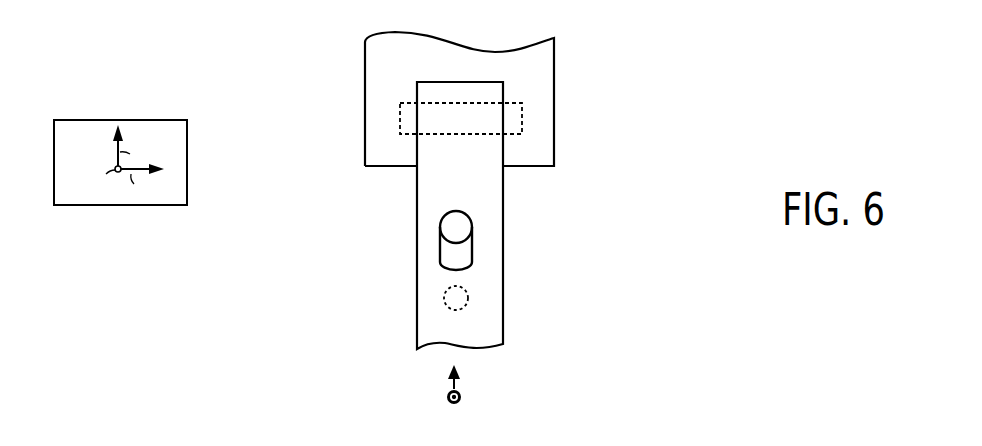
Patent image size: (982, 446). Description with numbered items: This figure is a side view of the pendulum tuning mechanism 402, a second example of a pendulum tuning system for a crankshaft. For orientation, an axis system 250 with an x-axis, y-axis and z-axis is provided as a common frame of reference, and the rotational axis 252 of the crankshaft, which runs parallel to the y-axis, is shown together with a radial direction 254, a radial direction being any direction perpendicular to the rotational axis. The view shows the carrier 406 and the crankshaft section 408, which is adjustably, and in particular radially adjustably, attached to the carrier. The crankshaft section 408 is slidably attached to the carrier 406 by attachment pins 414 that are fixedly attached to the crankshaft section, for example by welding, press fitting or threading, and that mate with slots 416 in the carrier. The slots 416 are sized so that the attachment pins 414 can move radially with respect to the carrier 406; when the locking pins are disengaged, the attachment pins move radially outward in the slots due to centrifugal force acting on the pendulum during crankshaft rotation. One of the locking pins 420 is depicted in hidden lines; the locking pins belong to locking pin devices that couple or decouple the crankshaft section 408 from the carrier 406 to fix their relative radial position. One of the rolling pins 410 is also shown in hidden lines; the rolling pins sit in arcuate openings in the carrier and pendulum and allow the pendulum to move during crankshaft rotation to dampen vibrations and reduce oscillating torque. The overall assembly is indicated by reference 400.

The axis system 250 is at (114, 113).
The assembly 400 is at (645, 80).
The carrier 406 is at (530, 63).
The rolling pin 410 is at (411, 102).
The pendulum tuning mechanism 402 is at (538, 244).
The crankshaft section 408 is at (492, 191).
The attachment pin 414 is at (454, 224).
The slot 416 is at (455, 254).
The locking pin 420 is at (462, 297).
The rotational axis 252 is at (446, 397).
The radial direction 254 is at (460, 384).